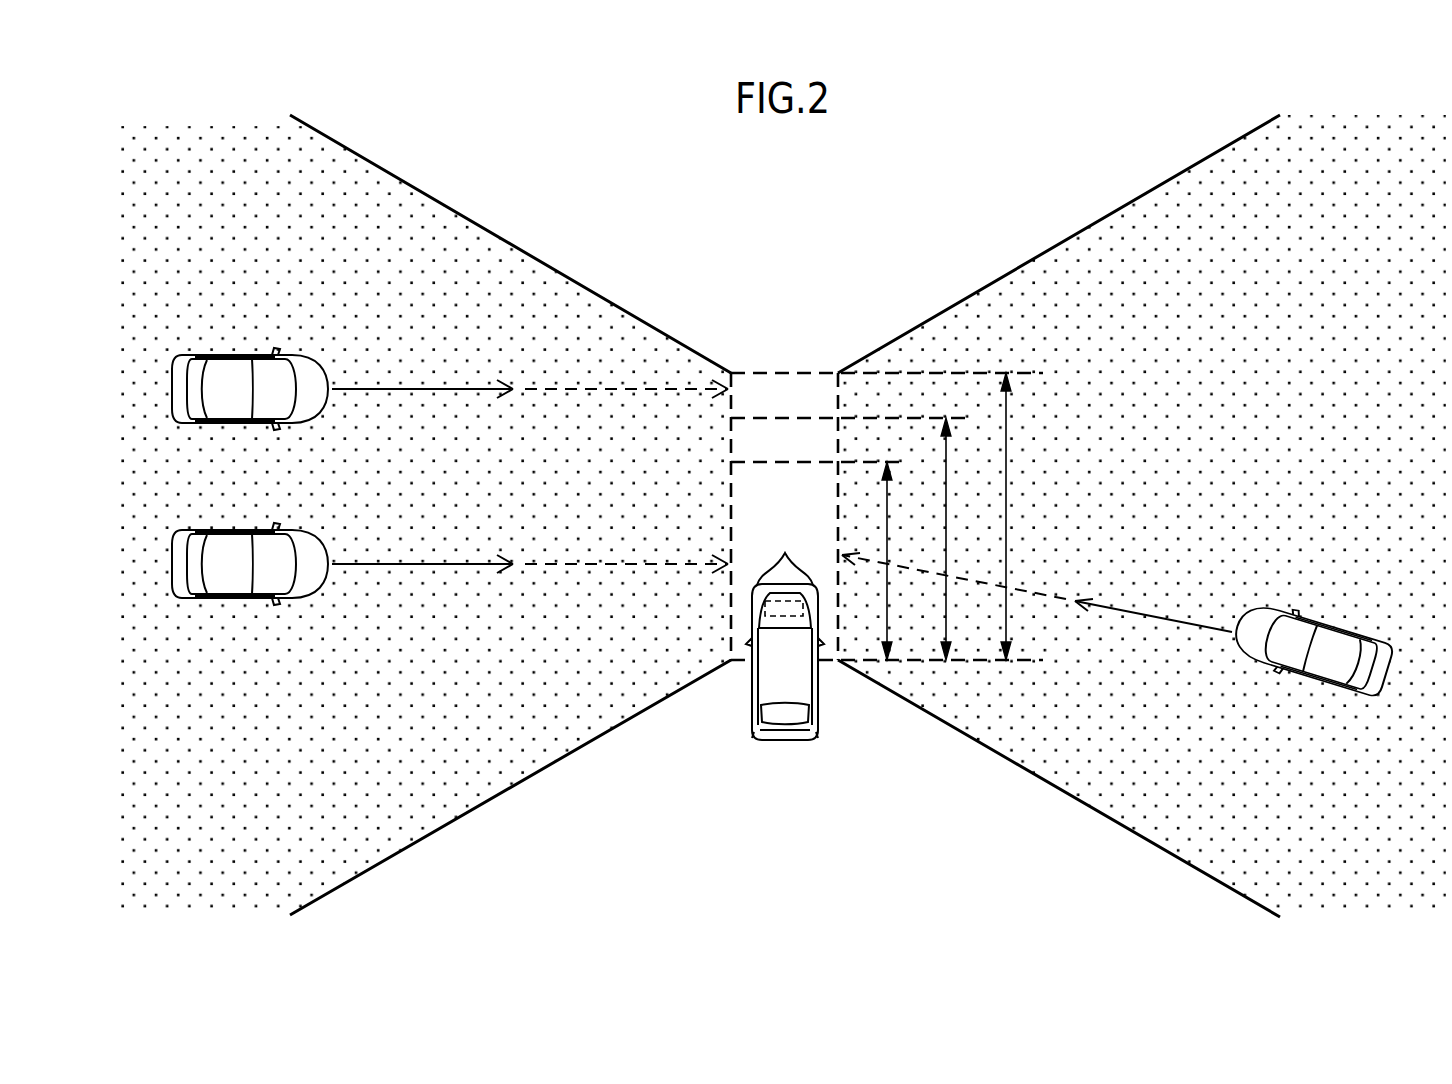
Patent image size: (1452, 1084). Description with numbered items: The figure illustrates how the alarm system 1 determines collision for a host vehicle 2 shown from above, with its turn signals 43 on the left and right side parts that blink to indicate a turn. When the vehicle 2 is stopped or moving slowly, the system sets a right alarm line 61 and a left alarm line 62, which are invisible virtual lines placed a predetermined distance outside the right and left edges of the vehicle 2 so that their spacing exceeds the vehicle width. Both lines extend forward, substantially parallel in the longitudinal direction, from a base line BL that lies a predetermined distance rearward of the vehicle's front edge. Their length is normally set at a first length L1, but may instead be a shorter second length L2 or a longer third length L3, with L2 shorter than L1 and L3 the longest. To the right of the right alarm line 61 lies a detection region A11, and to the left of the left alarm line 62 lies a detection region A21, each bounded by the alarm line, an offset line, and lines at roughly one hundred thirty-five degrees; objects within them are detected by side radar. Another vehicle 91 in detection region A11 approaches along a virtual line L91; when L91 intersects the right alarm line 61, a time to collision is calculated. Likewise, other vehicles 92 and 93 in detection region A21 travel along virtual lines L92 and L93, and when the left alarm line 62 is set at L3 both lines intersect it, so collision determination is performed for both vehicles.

The alarm system 1 is at (750, 607).
The vehicle 2 is at (778, 660).
The turn signal 43 is at (785, 558).
The right alarm line 61 is at (836, 510).
The left alarm line 62 is at (734, 484).
The other vehicle 91 is at (1326, 615).
The other vehicle 92 is at (229, 532).
The other vehicle 93 is at (229, 356).
The virtual line L91 is at (1046, 592).
The virtual line L92 is at (568, 561).
The virtual line L93 is at (568, 387).
The first length L1 is at (960, 539).
The second length L2 is at (901, 561).
The third length L3 is at (1021, 516).
The base line BL is at (985, 664).
The detection region A11 is at (1065, 795).
The detection region A21 is at (500, 798).